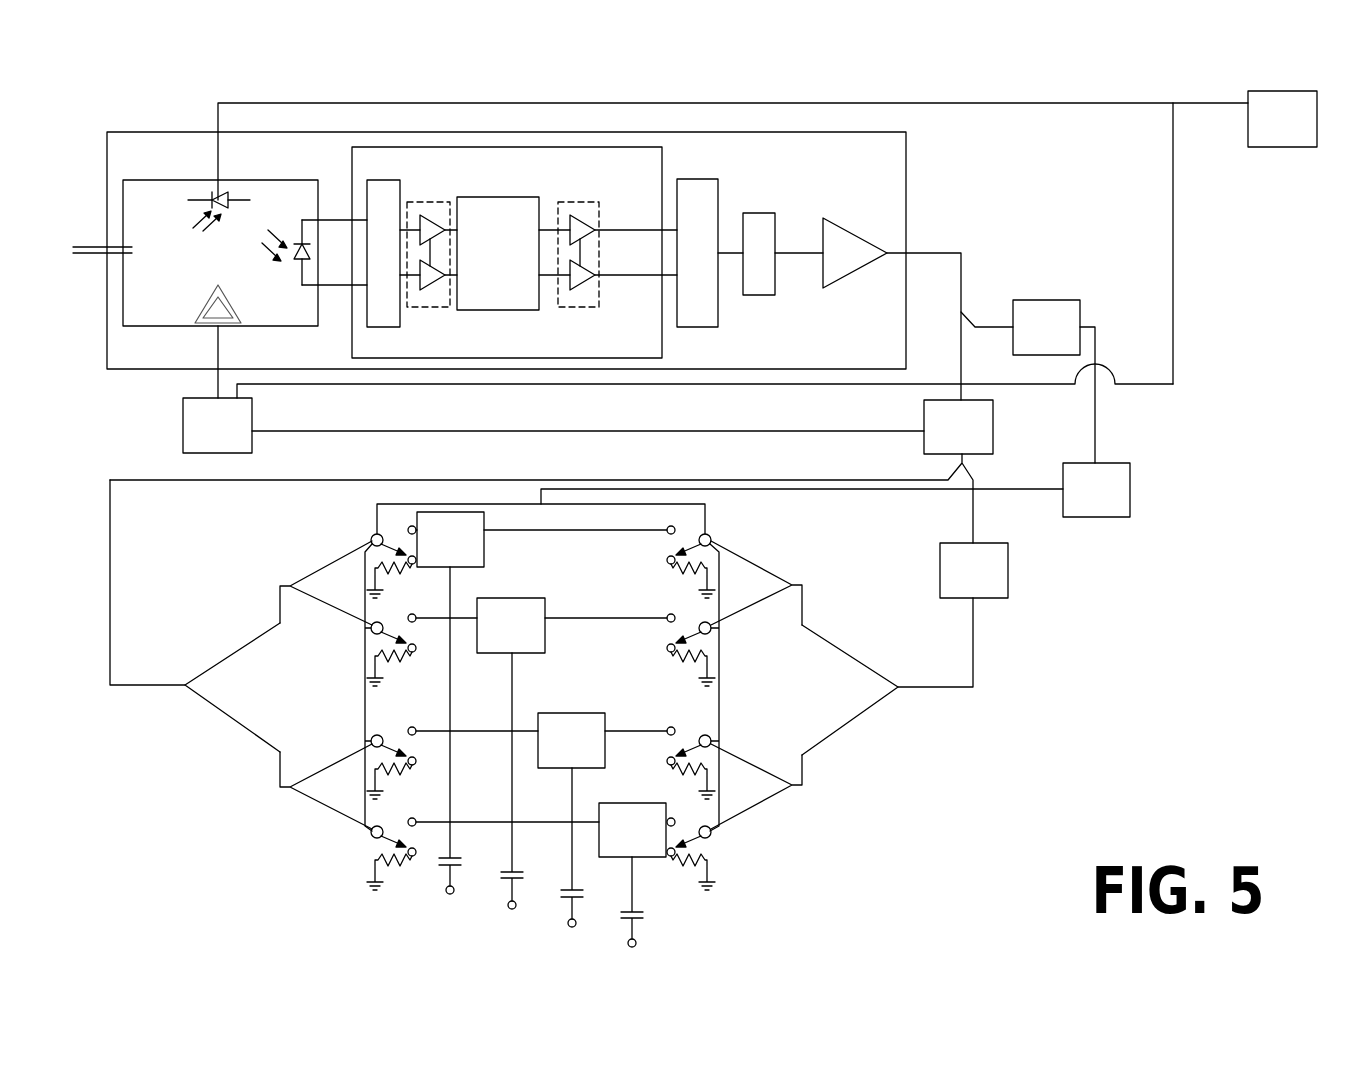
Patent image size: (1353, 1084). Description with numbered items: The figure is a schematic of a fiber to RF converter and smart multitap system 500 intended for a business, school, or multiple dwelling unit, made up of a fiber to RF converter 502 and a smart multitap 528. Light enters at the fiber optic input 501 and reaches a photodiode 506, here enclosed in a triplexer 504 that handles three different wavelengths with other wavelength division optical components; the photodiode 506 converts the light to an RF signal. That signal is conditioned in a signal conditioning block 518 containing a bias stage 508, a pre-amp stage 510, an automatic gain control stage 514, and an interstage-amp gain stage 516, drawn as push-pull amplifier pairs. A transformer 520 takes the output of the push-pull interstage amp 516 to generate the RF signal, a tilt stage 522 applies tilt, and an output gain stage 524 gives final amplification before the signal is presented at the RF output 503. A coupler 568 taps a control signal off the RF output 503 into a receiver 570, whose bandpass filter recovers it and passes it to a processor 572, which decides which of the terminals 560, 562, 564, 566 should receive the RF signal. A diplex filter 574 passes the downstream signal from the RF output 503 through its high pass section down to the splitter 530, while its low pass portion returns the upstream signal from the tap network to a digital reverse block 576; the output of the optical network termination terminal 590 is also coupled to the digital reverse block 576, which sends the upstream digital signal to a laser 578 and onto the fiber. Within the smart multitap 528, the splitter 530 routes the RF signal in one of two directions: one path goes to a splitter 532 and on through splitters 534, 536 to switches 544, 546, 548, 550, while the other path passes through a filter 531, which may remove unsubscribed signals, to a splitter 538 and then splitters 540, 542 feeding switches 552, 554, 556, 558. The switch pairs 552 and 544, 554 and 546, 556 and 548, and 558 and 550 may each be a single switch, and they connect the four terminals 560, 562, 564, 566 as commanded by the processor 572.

The fiber to RF converter and smart multitap system 500 is at (1262, 708).
The fiber optic input 501 is at (100, 267).
The fiber to RF converter 502 is at (487, 250).
The RF output 503 is at (924, 314).
The triplexer 504 is at (220, 253).
The photodiode 506 is at (286, 245).
The bias stage 508 is at (378, 200).
The pre-amp stage 510 is at (437, 295).
The automatic gain control stage 514 is at (498, 253).
The interstage-amp gain stage 516 is at (587, 212).
The signal conditioning block 518 is at (514, 255).
The transformer 520 is at (698, 253).
The tilt stage 522 is at (749, 222).
The output gain stage 524 is at (855, 253).
The smart multitap 528 is at (795, 851).
The splitter 530 is at (586, 498).
The filter 531 is at (974, 570).
The splitter 532 is at (221, 687).
The splitter 534 is at (312, 583).
The splitter 536 is at (317, 786).
The splitter 538 is at (868, 690).
The splitter 540 is at (779, 583).
The splitter 542 is at (782, 786).
The switch 544 is at (376, 555).
The switch 546 is at (369, 650).
The switch 548 is at (372, 763).
The switch 550 is at (375, 854).
The switch 552 is at (711, 556).
The switch 554 is at (715, 650).
The switch 556 is at (715, 763).
The switch 558 is at (711, 854).
The terminal 560 is at (541, 703).
The terminal 562 is at (541, 753).
The terminal 564 is at (541, 820).
The terminal 566 is at (541, 875).
The coupler 568 is at (987, 311).
The receiver 570 is at (1046, 327).
The processor 572 is at (1096, 490).
The diplex filter 574 is at (958, 427).
The digital reverse block 576 is at (217, 425).
The laser 578 is at (206, 304).
The optical network termination terminal 590 is at (1282, 119).